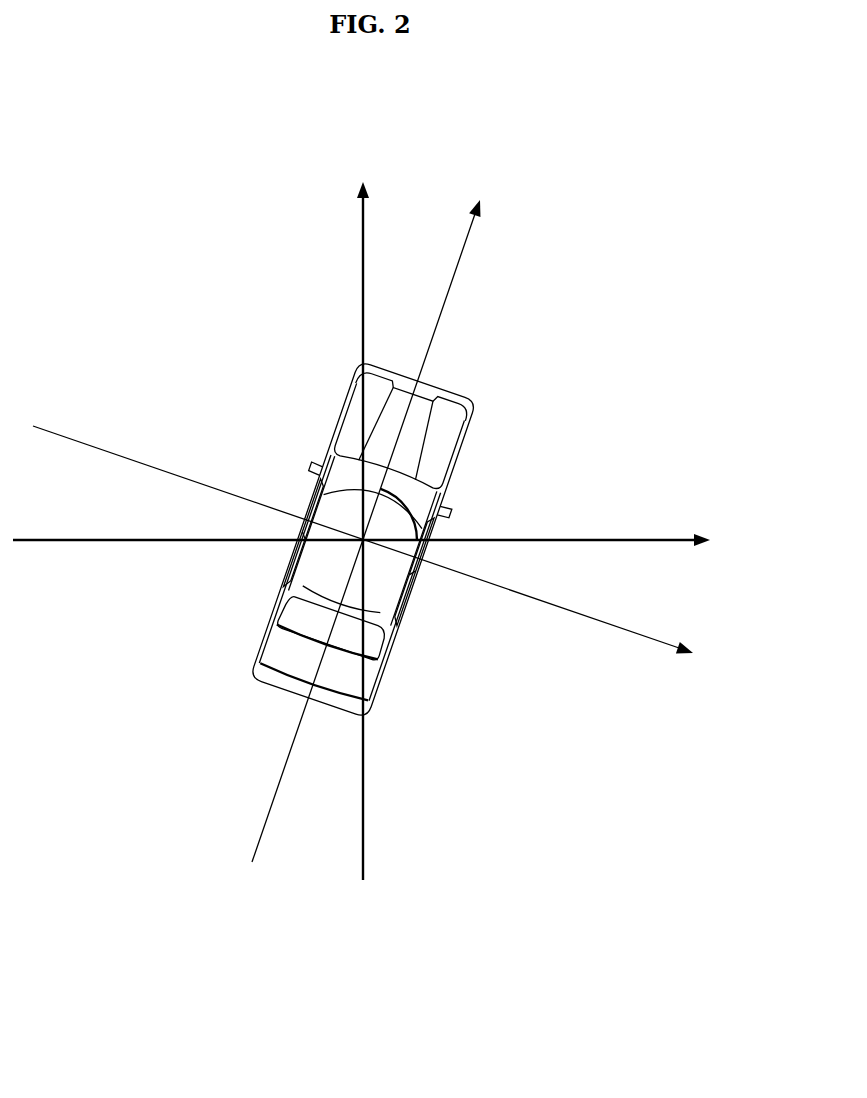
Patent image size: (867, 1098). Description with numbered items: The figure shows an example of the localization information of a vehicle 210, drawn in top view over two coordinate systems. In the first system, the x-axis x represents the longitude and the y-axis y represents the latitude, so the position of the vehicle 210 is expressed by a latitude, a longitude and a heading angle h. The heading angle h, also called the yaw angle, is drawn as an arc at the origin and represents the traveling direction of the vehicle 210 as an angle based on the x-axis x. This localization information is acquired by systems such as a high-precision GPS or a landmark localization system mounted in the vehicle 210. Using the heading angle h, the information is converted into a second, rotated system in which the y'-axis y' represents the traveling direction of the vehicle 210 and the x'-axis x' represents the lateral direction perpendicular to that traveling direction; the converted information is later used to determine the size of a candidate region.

The vehicle 210 is at (262, 633).
The heading angle h is at (401, 512).
The x-axis x is at (370, 541).
The y-axis y is at (362, 516).
The x'-axis x' is at (375, 548).
The y'-axis y' is at (374, 516).